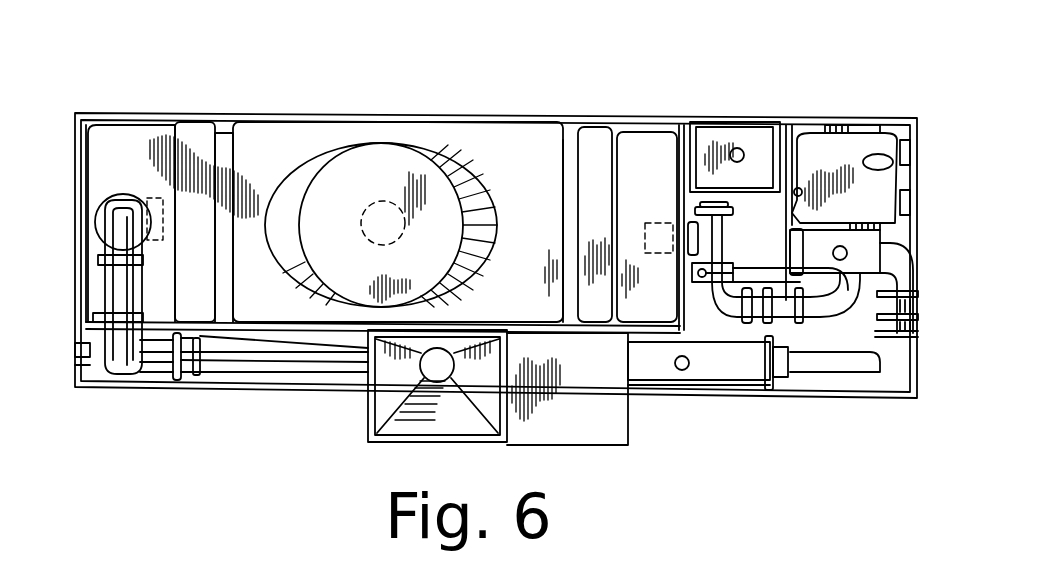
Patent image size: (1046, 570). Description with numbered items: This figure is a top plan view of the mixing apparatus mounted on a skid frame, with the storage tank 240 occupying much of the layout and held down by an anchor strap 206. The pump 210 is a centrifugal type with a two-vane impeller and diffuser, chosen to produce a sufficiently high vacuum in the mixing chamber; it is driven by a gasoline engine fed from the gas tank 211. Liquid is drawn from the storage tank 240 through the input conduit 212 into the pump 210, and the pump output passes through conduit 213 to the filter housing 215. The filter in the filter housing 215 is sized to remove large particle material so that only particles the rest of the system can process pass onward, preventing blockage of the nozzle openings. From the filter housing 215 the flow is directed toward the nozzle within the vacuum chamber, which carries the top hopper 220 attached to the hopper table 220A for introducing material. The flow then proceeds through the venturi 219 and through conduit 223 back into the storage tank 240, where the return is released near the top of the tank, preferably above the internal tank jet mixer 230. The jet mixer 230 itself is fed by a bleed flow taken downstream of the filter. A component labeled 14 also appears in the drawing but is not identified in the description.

The anchor strap 206 is at (226, 132).
The internal tank jet mixer 230 is at (382, 202).
The storage tank 240 is at (597, 143).
The input conduit 212 is at (655, 223).
The gas tank 211 is at (753, 128).
The pump 210 is at (850, 158).
The valve 14 is at (727, 268).
The conduit 223 is at (118, 372).
The venturi 219 is at (226, 362).
The top hopper 220 is at (378, 396).
The hopper table 220A is at (613, 421).
The filter housing 215 is at (731, 364).
The conduit 213 is at (886, 362).